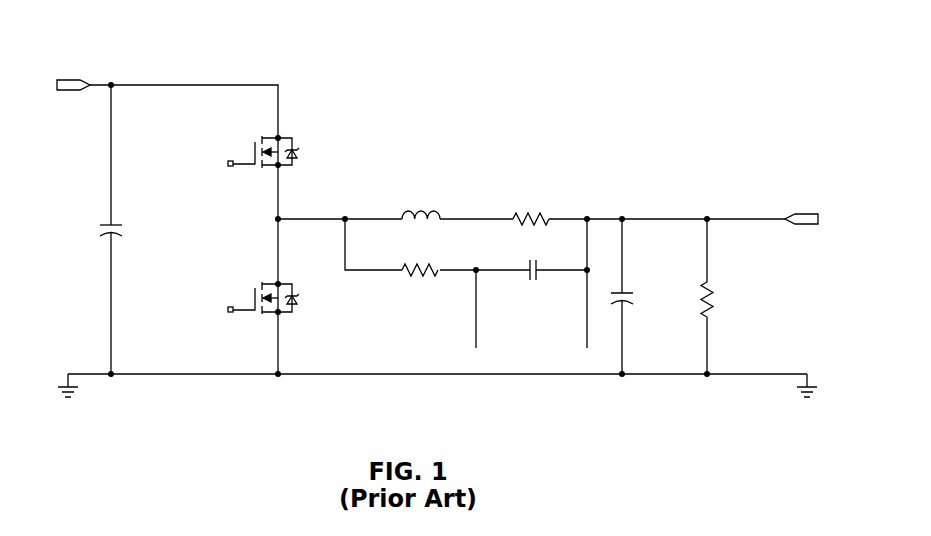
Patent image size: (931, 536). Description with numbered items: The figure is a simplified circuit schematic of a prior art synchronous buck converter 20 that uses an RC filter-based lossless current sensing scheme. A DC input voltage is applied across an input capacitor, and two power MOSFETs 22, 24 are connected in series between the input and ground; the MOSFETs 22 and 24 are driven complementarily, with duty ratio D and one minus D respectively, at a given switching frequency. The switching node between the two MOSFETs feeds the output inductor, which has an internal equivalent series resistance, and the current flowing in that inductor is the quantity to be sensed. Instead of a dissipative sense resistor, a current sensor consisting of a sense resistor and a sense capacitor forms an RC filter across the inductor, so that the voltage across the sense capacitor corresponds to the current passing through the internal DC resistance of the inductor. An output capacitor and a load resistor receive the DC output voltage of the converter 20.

The synchronous buck converter 20 is at (132, 48).
The MOSFET 22 is at (291, 138).
The MOSFET 24 is at (291, 284).